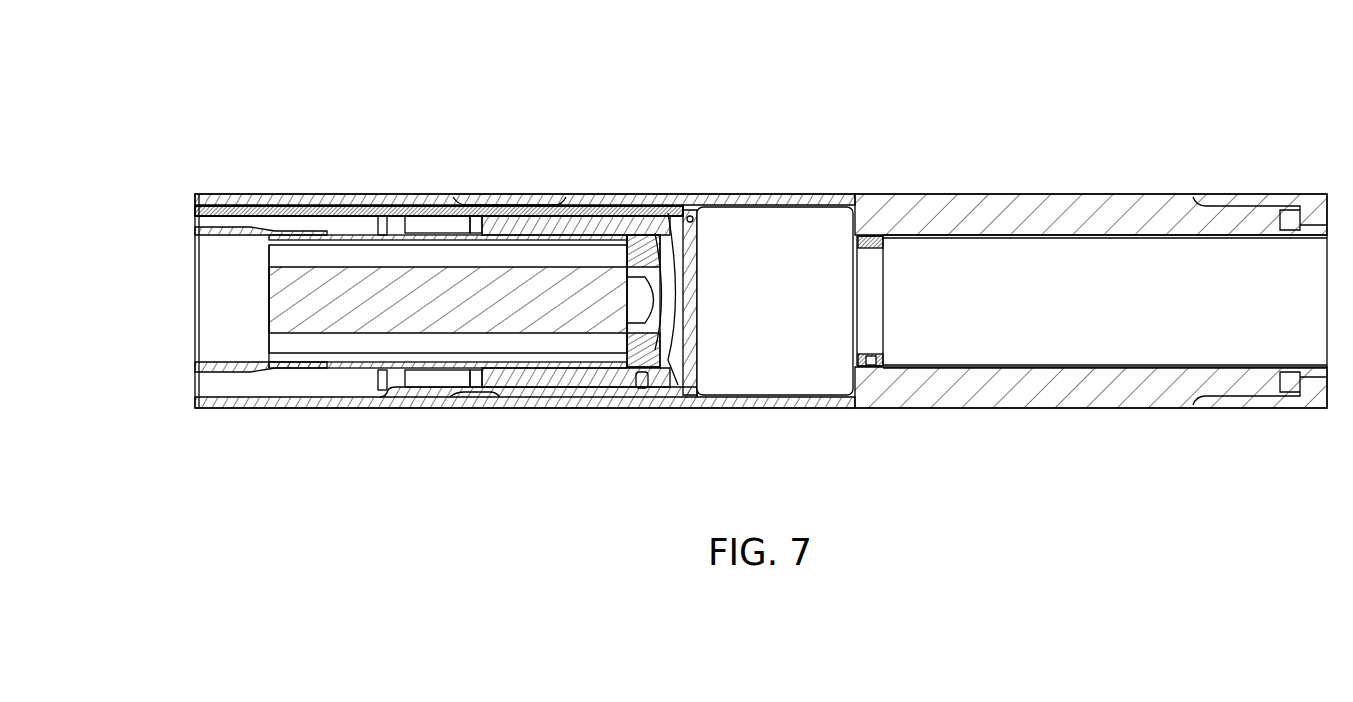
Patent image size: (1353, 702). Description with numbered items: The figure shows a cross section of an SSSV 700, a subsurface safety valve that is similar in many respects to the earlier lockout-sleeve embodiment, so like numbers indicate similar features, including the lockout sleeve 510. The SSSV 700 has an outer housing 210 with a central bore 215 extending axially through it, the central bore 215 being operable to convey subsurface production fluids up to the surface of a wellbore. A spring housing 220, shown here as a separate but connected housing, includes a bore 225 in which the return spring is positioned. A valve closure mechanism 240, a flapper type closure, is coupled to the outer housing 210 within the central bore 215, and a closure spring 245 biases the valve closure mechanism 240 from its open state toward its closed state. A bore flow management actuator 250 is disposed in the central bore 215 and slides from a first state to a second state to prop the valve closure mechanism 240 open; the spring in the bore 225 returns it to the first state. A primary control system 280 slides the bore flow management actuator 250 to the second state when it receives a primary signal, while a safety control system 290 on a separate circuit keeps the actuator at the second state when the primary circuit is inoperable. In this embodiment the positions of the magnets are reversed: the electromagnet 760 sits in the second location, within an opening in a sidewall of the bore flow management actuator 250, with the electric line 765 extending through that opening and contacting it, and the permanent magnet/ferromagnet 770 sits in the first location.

The SSSV 700 is at (174, 77).
The outer housing 210 is at (1126, 194).
The central bore 215 is at (1127, 311).
The spring housing 220 is at (270, 194).
The bore 225 is at (283, 386).
The valve closure mechanism 240 is at (689, 383).
The closure spring 245 is at (688, 212).
The bore flow management actuator 250 is at (432, 240).
The primary control system 280 is at (184, 387).
The safety control system 290 is at (184, 210).
The lockout sleeve 510 is at (984, 368).
The electromagnet 760 is at (598, 240).
The electric line 765 is at (512, 243).
The permanent magnet/ferromagnet 770 is at (872, 236).